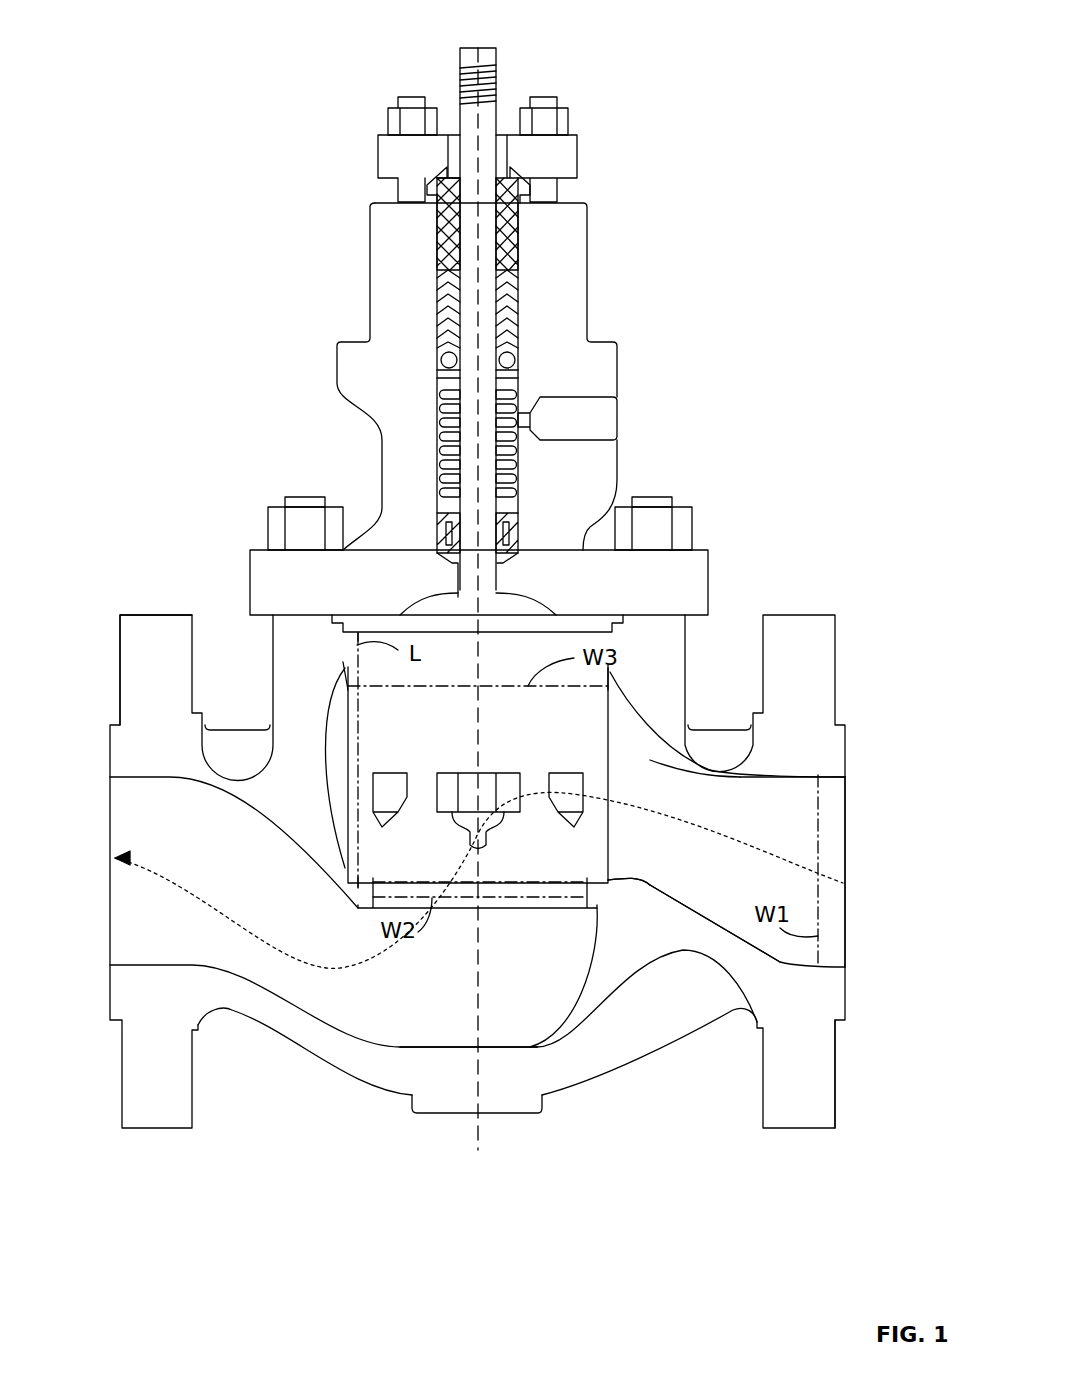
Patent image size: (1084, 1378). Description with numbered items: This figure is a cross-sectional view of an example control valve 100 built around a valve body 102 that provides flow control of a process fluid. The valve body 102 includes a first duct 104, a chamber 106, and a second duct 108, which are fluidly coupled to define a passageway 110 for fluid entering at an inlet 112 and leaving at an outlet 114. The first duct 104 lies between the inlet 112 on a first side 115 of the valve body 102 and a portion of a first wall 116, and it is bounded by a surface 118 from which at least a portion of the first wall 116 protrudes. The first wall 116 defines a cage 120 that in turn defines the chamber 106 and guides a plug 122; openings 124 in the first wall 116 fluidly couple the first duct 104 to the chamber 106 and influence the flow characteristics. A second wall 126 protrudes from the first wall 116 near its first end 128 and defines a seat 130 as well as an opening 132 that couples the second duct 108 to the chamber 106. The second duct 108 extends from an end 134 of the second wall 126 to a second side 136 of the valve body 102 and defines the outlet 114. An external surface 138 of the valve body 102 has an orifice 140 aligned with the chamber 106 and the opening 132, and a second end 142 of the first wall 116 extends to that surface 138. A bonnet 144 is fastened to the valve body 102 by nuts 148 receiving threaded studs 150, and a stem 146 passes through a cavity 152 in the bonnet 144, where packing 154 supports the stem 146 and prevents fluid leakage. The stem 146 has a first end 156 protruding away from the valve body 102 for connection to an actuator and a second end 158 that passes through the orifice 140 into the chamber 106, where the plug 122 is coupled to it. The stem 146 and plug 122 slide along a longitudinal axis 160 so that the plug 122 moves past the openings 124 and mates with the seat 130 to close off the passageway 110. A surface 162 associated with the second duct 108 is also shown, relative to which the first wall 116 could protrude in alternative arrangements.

The control valve 100 is at (767, 54).
The valve body 102 is at (815, 615).
The first duct 104 is at (825, 777).
The chamber 106 is at (376, 803).
The second duct 108 is at (145, 965).
The passageway 110 is at (722, 838).
The inlet 112 is at (848, 853).
The outlet 114 is at (106, 828).
The first side 115 is at (845, 992).
The first wall 116 is at (612, 795).
The surface 118 is at (650, 883).
The cage 120 is at (347, 840).
The plug 122 is at (576, 826).
The openings 124 is at (377, 781).
The second wall 126 is at (368, 910).
The first end 128 is at (615, 885).
The seat 130 is at (578, 896).
The opening 132 is at (530, 906).
The end 134 is at (574, 910).
The second side 136 is at (110, 752).
The surface 138 is at (575, 622).
The orifice 140 is at (527, 626).
The second end 142 is at (422, 628).
The bonnet 144 is at (370, 272).
The stem 146 is at (497, 55).
The nuts 148 is at (268, 540).
The threaded studs 150 is at (285, 503).
The cavity 152 is at (434, 380).
The packing 154 is at (512, 262).
The first end 156 is at (463, 48).
The second end 158 is at (465, 826).
The longitudinal axis 160 is at (480, 1148).
The surface 162 is at (372, 1046).